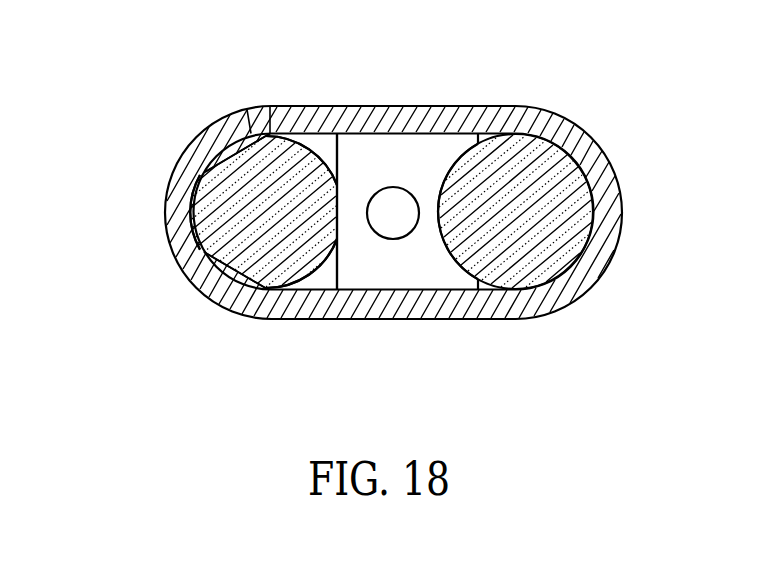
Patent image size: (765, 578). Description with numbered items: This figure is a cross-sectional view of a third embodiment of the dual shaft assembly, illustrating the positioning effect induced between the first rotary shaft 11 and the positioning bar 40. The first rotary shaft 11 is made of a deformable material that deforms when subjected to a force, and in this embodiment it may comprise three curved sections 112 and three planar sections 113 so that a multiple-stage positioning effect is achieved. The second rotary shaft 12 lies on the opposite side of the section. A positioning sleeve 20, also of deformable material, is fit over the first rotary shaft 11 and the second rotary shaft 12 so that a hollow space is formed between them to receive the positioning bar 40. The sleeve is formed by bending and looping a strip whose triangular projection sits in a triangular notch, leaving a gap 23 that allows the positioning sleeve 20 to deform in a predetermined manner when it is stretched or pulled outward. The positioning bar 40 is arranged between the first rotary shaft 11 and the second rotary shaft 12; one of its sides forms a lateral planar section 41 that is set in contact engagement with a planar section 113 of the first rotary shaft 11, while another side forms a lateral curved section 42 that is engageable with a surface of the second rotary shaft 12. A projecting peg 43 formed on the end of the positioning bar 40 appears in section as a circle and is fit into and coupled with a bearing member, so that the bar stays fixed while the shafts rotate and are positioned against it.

The first rotary shaft 11 is at (203, 193).
The second rotary shaft 12 is at (533, 205).
The curved section 112 is at (322, 140).
The planar section 113 is at (227, 170).
The positioning sleeve 20 is at (455, 115).
The gap 23 is at (260, 120).
The positioning bar 40 is at (397, 163).
The lateral planar section 41 is at (338, 213).
The lateral curved section 42 is at (440, 222).
The projecting peg 43 is at (385, 208).